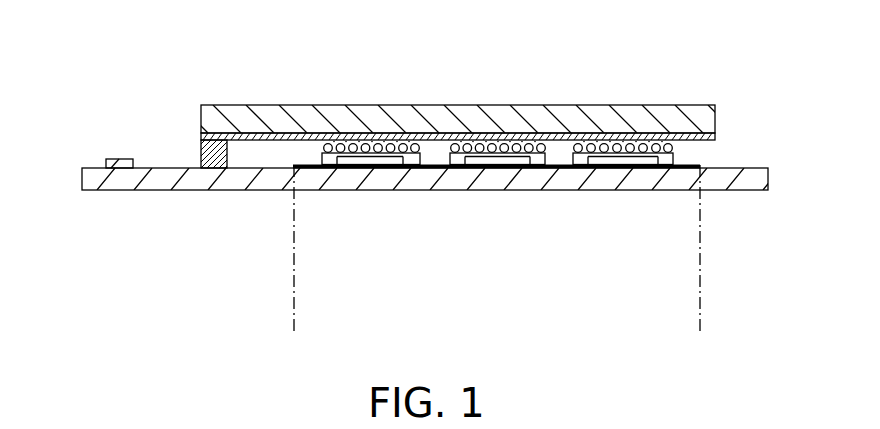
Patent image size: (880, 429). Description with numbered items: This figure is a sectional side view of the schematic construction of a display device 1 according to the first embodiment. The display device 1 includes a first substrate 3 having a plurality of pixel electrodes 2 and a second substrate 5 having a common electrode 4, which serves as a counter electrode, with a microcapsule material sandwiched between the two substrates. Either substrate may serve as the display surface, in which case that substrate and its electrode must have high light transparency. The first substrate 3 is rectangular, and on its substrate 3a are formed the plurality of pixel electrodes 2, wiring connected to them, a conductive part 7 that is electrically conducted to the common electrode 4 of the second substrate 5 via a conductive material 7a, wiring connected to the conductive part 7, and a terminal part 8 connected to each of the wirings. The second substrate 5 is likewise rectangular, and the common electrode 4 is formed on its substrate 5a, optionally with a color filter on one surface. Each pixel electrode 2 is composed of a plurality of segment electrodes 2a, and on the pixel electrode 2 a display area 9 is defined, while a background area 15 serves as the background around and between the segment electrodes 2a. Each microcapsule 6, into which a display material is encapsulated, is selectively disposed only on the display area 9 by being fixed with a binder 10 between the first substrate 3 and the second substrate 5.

The display device 1 is at (687, 71).
The pixel electrode 2 is at (497, 204).
The segment electrode 2a is at (412, 162).
The first substrate 3 is at (250, 197).
The substrate 3a is at (162, 173).
The common electrode 4 is at (243, 122).
The second substrate 5 is at (410, 98).
The substrate 5a is at (362, 120).
The microcapsule 6 is at (474, 144).
The conductive part 7 is at (211, 169).
The conductive material 7a is at (202, 149).
The terminal part 8 is at (124, 158).
The display area 9 is at (680, 257).
The binder 10 is at (527, 142).
The background area 15 is at (700, 322).